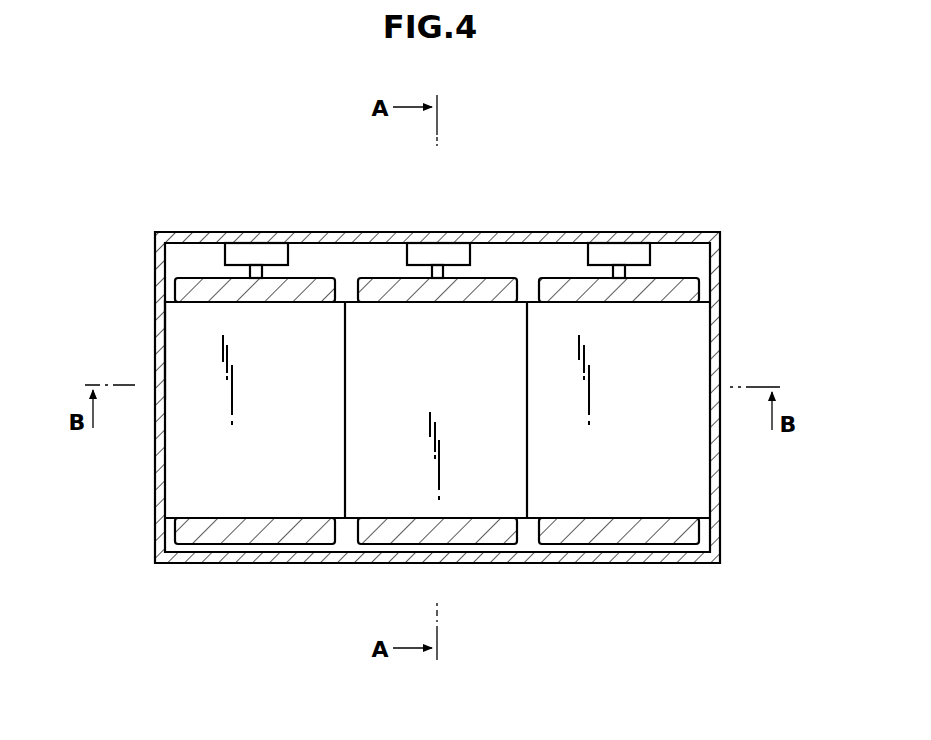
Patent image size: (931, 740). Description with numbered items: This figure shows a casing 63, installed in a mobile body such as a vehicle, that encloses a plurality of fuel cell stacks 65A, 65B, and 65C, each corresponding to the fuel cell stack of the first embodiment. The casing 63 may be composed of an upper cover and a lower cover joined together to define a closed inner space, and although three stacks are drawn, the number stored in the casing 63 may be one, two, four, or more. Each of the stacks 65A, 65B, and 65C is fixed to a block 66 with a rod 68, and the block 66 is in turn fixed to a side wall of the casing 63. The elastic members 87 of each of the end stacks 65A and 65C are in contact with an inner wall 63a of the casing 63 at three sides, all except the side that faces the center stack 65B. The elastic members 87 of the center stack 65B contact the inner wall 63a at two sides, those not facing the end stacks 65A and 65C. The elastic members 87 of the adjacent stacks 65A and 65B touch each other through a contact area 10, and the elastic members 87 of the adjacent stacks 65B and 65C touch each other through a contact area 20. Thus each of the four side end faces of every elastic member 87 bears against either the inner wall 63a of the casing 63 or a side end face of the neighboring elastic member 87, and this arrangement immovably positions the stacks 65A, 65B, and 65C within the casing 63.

The casing 63 is at (190, 236).
The inner wall 63a is at (179, 341).
The block 66 is at (246, 248).
The rod 68 is at (262, 274).
The fuel cell stack 65A is at (318, 288).
The fuel cell stack 65B is at (500, 288).
The fuel cell stack 65C is at (682, 288).
The elastic member 87 is at (178, 478).
The contact area 10 is at (342, 476).
The contact area 20 is at (530, 476).